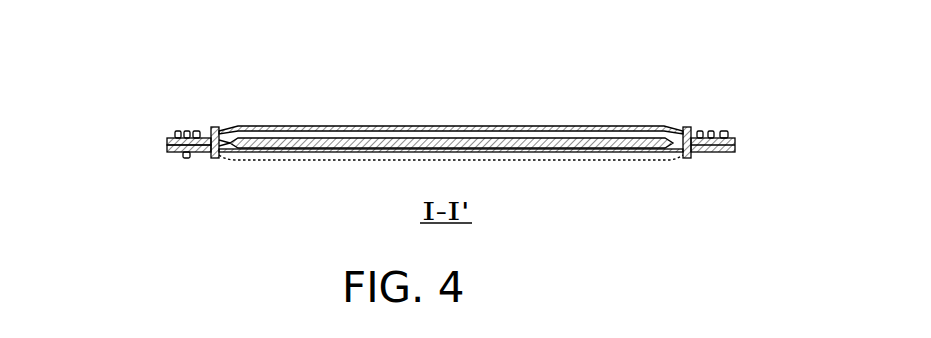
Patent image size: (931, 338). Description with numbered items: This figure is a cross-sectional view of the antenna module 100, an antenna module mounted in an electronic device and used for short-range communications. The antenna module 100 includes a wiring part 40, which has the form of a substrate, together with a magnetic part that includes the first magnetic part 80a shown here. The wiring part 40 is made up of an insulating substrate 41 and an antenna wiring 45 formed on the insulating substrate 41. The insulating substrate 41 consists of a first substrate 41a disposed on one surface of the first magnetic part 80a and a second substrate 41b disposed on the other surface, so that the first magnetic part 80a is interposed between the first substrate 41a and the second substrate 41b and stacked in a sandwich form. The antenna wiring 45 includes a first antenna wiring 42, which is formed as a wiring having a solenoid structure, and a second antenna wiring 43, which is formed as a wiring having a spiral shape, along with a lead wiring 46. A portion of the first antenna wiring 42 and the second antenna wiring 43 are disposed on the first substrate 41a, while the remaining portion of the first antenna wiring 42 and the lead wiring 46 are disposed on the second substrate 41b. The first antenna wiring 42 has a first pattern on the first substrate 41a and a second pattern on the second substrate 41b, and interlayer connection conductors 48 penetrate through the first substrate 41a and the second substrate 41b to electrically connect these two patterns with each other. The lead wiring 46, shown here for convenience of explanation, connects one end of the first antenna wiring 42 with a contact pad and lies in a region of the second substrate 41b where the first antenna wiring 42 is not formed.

The antenna module 100 is at (422, 35).
The first magnetic part 80a is at (558, 126).
The antenna wiring 45 is at (245, 63).
The second antenna wiring 43 is at (192, 130).
The first antenna wiring 42 is at (270, 128).
The insulating substrate 41 is at (93, 122).
The first substrate 41a is at (166, 139).
The second substrate 41b is at (166, 152).
The lead wiring 46 is at (187, 159).
The interlayer connection conductors 48 is at (220, 160).
The wiring part 40 is at (745, 131).